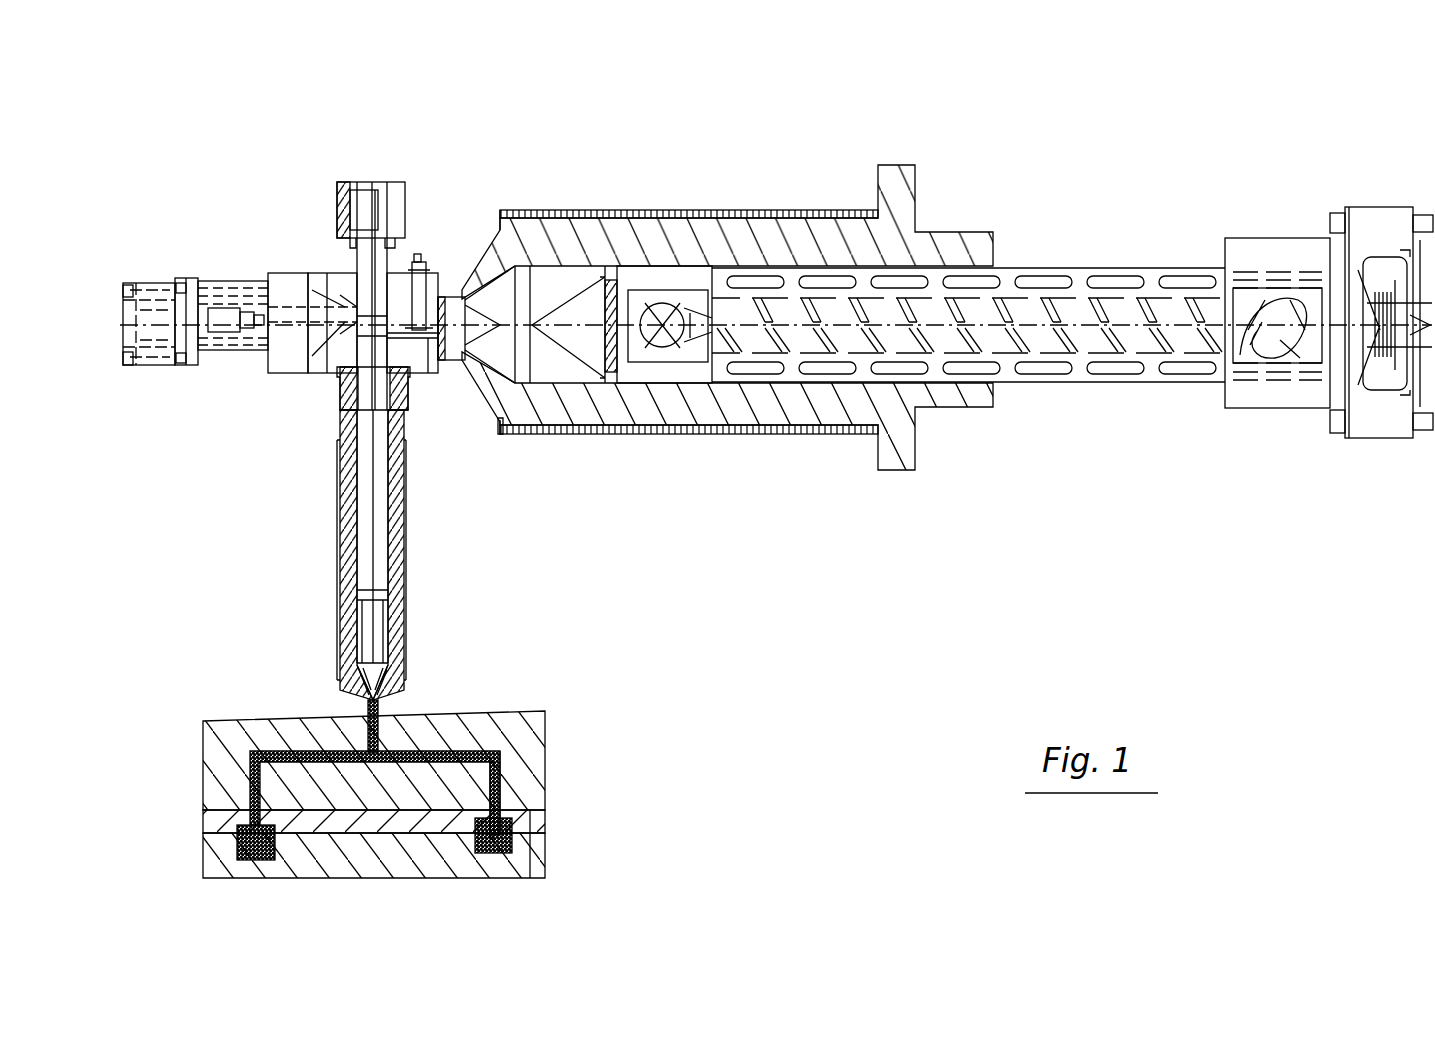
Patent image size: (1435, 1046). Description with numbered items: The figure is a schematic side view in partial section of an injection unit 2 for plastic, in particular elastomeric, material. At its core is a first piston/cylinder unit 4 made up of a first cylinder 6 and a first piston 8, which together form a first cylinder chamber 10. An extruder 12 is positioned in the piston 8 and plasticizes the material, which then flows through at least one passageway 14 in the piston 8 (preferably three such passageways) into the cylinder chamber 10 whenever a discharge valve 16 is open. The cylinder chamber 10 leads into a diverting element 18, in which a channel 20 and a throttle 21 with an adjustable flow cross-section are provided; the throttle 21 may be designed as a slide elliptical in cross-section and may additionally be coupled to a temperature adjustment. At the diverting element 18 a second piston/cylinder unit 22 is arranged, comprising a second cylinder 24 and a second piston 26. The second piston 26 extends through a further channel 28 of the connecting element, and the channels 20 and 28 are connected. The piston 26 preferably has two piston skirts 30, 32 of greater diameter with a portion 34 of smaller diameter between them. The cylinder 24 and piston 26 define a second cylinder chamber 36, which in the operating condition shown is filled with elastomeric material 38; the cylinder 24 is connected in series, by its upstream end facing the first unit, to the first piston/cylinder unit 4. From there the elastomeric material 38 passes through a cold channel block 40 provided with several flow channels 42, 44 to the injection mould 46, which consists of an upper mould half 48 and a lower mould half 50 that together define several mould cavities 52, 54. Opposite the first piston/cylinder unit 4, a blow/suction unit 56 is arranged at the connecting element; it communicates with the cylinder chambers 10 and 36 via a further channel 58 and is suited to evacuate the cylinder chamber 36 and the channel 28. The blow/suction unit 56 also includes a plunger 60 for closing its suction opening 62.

The injection unit 2 is at (658, 530).
The first piston/cylinder unit 4 is at (746, 237).
The first cylinder 6 is at (800, 400).
The first piston 8 is at (585, 345).
The first cylinder chamber 10 is at (547, 293).
The extruder 12 is at (1082, 332).
The passageway 14 is at (588, 302).
The discharge valve 16 is at (616, 320).
The diverting element 18 is at (432, 362).
The channel 20 is at (440, 312).
The throttle 21 is at (422, 320).
The second piston/cylinder unit 22 is at (354, 556).
The second cylinder 24 is at (398, 636).
The second piston 26 is at (383, 525).
The further channel 28 is at (362, 322).
The piston skirt 30 is at (370, 332).
The piston skirt 32 is at (367, 635).
The portion of smaller diameter 34 is at (368, 485).
The second cylinder chamber 36 is at (360, 680).
The elastomeric material 38 is at (365, 732).
The cold channel block 40 is at (218, 745).
The flow channel 42 is at (258, 788).
The flow channel 44 is at (502, 772).
The injection mould 46 is at (525, 851).
The upper mould half 48 is at (218, 828).
The lower mould half 50 is at (228, 856).
The mould cavity 52 is at (278, 848).
The mould cavity 54 is at (480, 842).
The blow/suction unit 56 is at (148, 295).
The further channel 58 is at (352, 335).
The plunger 60 is at (355, 300).
The suction opening 62 is at (376, 182).